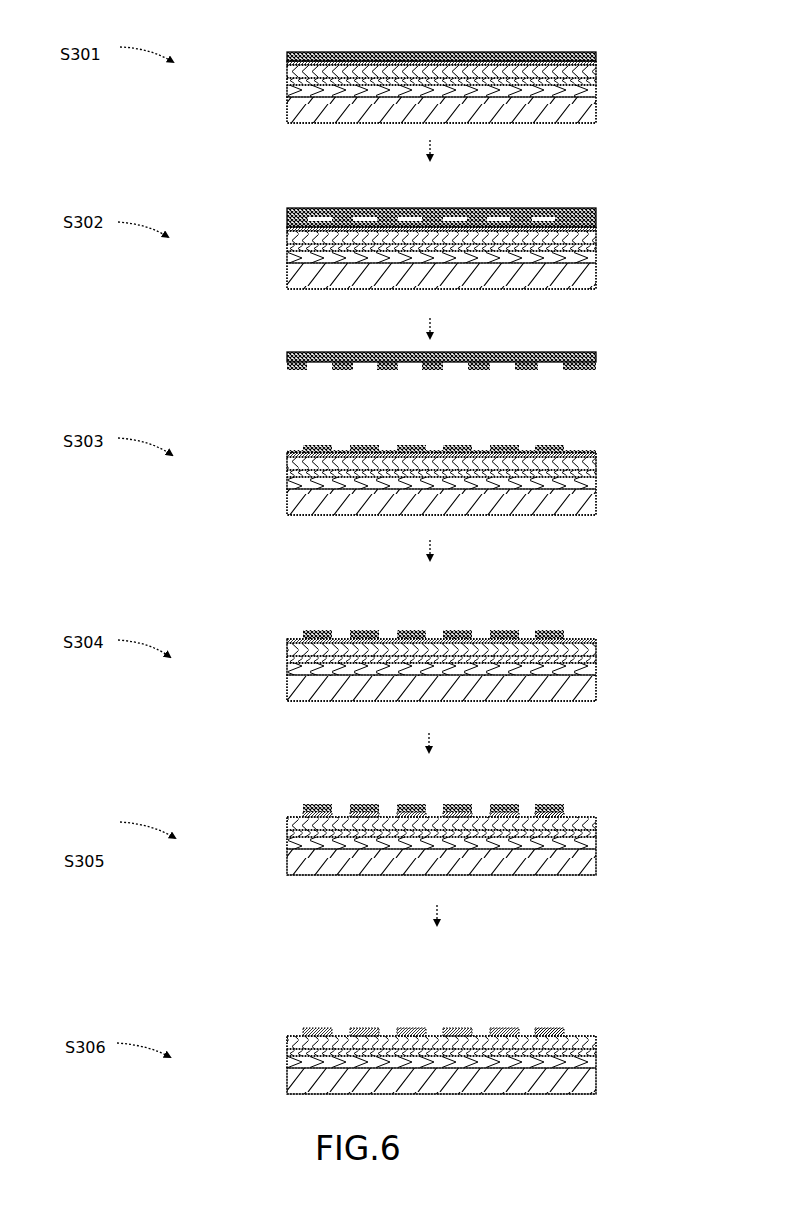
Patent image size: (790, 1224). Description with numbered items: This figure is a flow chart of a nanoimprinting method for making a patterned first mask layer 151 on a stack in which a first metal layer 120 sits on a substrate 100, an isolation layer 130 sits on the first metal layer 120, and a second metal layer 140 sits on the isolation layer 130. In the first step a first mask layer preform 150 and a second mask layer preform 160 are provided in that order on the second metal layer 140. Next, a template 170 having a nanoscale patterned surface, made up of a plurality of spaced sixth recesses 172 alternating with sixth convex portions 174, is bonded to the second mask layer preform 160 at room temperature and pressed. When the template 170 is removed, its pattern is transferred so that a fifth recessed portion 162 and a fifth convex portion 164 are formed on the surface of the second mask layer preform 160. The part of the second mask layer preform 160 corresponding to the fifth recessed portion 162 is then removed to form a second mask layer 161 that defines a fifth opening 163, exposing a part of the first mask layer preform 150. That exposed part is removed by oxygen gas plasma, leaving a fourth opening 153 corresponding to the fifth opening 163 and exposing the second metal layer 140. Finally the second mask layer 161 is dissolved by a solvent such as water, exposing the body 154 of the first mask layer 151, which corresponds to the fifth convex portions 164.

The substrate 100 is at (287, 120).
The first metal layer 120 is at (287, 97).
The isolation layer 130 is at (287, 84).
The second metal layer 140 is at (597, 72).
The first mask layer preform 150 is at (287, 63).
The first mask layer 151 is at (449, 887).
The fourth opening 153 is at (525, 812).
The body 154 is at (500, 769).
The second mask layer preform 160 is at (330, 55).
The second mask layer 161 is at (418, 690).
The fifth recessed portion 162 is at (432, 445).
The fifth opening 163 is at (543, 608).
The fifth convex portion 164 is at (555, 447).
The template 170 is at (503, 208).
The sixth recesses 172 is at (357, 217).
The sixth convex portions 174 is at (598, 218).